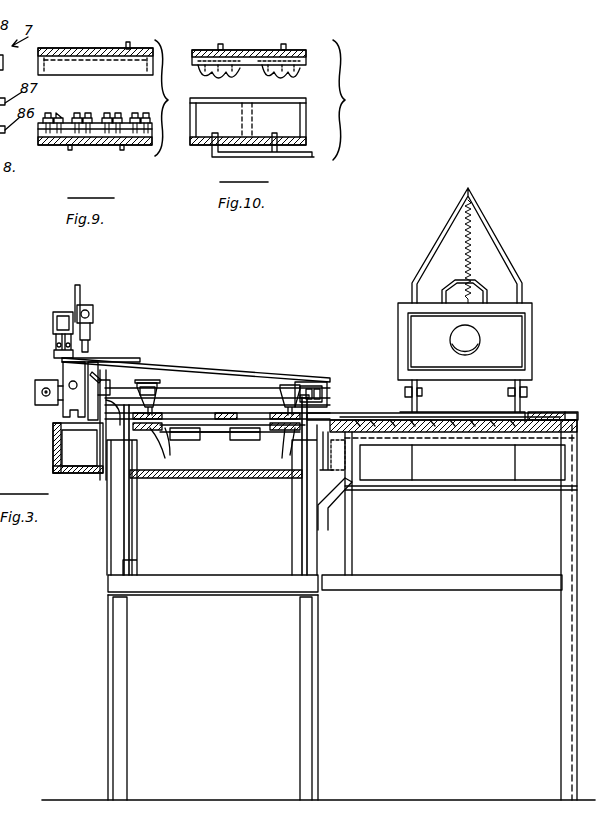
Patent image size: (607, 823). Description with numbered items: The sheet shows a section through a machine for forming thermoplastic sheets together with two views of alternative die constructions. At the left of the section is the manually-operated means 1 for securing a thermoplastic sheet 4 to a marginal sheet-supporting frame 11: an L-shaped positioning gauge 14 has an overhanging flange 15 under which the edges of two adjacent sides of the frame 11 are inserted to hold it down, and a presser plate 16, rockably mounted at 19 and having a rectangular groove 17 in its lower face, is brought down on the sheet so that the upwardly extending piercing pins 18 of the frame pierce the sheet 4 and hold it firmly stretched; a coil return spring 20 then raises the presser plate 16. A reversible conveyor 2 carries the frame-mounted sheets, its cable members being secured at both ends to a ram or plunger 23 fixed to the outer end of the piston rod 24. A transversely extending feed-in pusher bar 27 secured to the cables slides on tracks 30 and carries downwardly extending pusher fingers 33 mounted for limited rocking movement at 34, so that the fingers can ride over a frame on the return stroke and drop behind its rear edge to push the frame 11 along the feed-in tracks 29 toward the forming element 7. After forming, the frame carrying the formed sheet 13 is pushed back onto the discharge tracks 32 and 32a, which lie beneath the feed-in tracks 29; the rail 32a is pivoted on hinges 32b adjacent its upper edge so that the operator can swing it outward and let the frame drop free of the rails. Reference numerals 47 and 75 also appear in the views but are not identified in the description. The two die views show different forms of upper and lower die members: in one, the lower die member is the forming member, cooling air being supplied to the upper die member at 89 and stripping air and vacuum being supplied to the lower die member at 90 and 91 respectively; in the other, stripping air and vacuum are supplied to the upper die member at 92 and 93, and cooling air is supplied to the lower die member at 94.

In FIG. 3, the manually-operated means 1 is at (546, 300).
In FIG. 3, the reversible conveyor 2 is at (210, 378).
In FIG. 3, the thermoplastic sheet 4 is at (212, 402).
In FIG. 10, the forming element 7 is at (313, 60).
In FIG. 3, the frame 11 is at (562, 382).
In FIG. 3, the formed sheet 13 is at (200, 437).
In FIG. 3, the L-shaped positioning gauge 14 is at (568, 413).
In FIG. 3, the overhanging flange 15 is at (542, 413).
In FIG. 3, the presser plate 16 is at (510, 341).
In FIG. 3, the rectangular groove 17 is at (527, 359).
In FIG. 3, the piercing pins 18 is at (490, 432).
In FIG. 3, the rockable mounting 19 is at (508, 392).
In FIG. 3, the coil return spring 20 is at (471, 247).
In FIG. 3, the ram 23 is at (63, 372).
In FIG. 3, the piston rod 24 is at (70, 385).
In FIG. 3, the feed-in pusher bar 27 is at (270, 384).
In FIG. 3, the feed-in tracks 29 is at (148, 383).
In FIG. 3, the tracks 30 is at (98, 444).
In FIG. 3, the discharge track 32 is at (103, 462).
In FIG. 3, the pivoted discharge rail 32a is at (302, 468).
In FIG. 3, the hinges 32b is at (308, 418).
In FIG. 3, the pusher fingers 33 is at (160, 400).
In FIG. 3, the hinged mounting 34 is at (146, 393).
In FIG. 3, the frame beam 47 is at (194, 486).
In FIG. 9, the bar 75 is at (93, 48).
In FIG. 10, the bar 75 is at (246, 52).
In FIG. 9, the cooling air supply 89 is at (130, 46).
In FIG. 9, the stripping air supply 90 is at (71, 150).
In FIG. 9, the vacuum supply 91 is at (123, 150).
In FIG. 10, the stripping air supply 92 is at (221, 44).
In FIG. 10, the vacuum supply 93 is at (286, 46).
In FIG. 10, the cooling air supply 94 is at (312, 158).